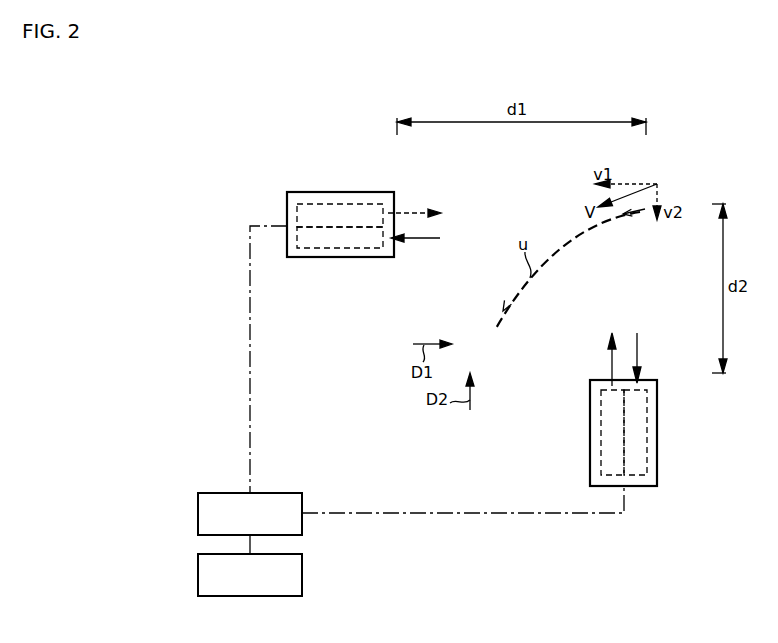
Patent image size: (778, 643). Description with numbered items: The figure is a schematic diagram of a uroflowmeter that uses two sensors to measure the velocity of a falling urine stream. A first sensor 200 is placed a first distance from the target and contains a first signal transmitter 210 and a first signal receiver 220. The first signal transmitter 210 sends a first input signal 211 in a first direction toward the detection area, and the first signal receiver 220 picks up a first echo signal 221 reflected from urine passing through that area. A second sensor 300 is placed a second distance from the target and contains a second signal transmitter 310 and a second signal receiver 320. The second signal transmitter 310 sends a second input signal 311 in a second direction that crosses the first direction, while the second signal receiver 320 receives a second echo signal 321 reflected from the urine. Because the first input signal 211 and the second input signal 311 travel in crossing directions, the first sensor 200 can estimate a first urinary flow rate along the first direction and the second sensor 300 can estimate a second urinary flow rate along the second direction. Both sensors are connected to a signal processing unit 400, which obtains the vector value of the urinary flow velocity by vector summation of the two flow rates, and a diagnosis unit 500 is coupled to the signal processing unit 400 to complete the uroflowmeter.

The first sensor 200 is at (302, 191).
The first signal transmitter 210 is at (352, 203).
The first input signal 211 is at (405, 210).
The first signal receiver 220 is at (352, 250).
The first echo signal 221 is at (430, 248).
The second sensor 300 is at (590, 470).
The second signal transmitter 310 is at (600, 418).
The second input signal 311 is at (610, 365).
The second signal receiver 320 is at (650, 418).
The second echo signal 321 is at (640, 345).
The signal processing unit 400 is at (198, 513).
The diagnosis unit 500 is at (198, 575).